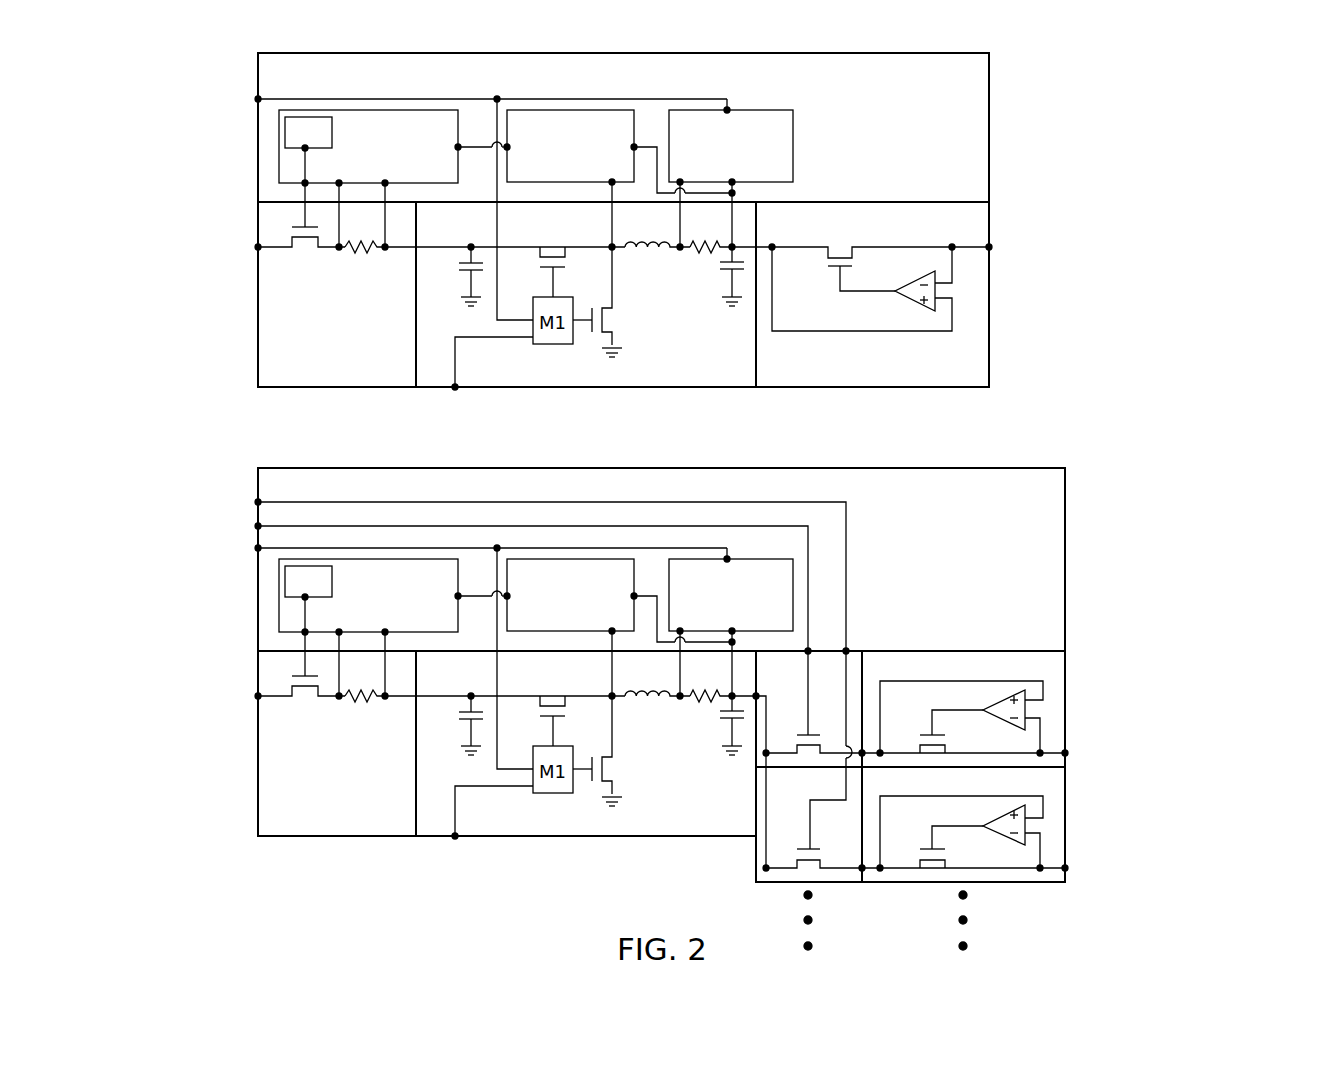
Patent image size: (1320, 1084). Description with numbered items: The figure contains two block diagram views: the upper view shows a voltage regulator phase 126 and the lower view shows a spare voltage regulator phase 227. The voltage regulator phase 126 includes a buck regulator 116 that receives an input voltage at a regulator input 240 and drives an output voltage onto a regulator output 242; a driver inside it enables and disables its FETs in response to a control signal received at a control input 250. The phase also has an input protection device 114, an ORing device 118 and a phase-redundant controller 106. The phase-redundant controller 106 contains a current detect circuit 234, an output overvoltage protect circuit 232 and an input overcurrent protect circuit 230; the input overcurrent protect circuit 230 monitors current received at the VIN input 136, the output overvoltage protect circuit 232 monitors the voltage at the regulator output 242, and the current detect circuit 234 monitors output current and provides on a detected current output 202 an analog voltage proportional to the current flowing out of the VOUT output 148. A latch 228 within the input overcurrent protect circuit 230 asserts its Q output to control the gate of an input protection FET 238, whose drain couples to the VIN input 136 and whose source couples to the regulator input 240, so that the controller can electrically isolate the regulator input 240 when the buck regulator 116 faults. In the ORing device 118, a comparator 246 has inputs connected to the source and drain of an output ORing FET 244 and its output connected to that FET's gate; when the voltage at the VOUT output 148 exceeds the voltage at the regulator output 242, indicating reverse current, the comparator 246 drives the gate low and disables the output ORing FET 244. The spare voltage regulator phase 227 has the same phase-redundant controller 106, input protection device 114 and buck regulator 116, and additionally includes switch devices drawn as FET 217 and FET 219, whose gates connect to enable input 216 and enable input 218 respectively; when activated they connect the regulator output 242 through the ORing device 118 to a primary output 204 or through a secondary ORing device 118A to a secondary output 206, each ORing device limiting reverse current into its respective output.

The phase-redundant controller 106 is at (309, 87).
The input protection device 114 is at (324, 321).
The buck regulator 116 is at (541, 378).
The ORing device 118 is at (824, 375).
The secondary ORing device 118A is at (914, 790).
The voltage regulator phase 126 is at (1040, 112).
The VIN input 136 is at (250, 700).
The VOUT output 148 is at (989, 247).
The detected current output 202 is at (236, 565).
The primary output 204 is at (1076, 743).
The secondary output 206 is at (1065, 868).
The enable input 216 is at (258, 526).
The switch device (FET 217) 217 is at (804, 675).
The enable input 218 is at (258, 502).
The switch device (FET 219) 219 is at (804, 790).
The spare voltage regulator phase 227 is at (1107, 480).
The latch 228 is at (326, 144).
The input overcurrent protect circuit 230 is at (374, 134).
The output overvoltage protect circuit 232 is at (554, 134).
The current detect circuit 234 is at (712, 141).
The input protection FET 238 is at (318, 249).
The regulator input 240 is at (425, 250).
The regulator output 242 is at (727, 248).
The output ORing FET 244 is at (843, 240).
The comparator 246 is at (904, 297).
The control input 250 is at (456, 390).